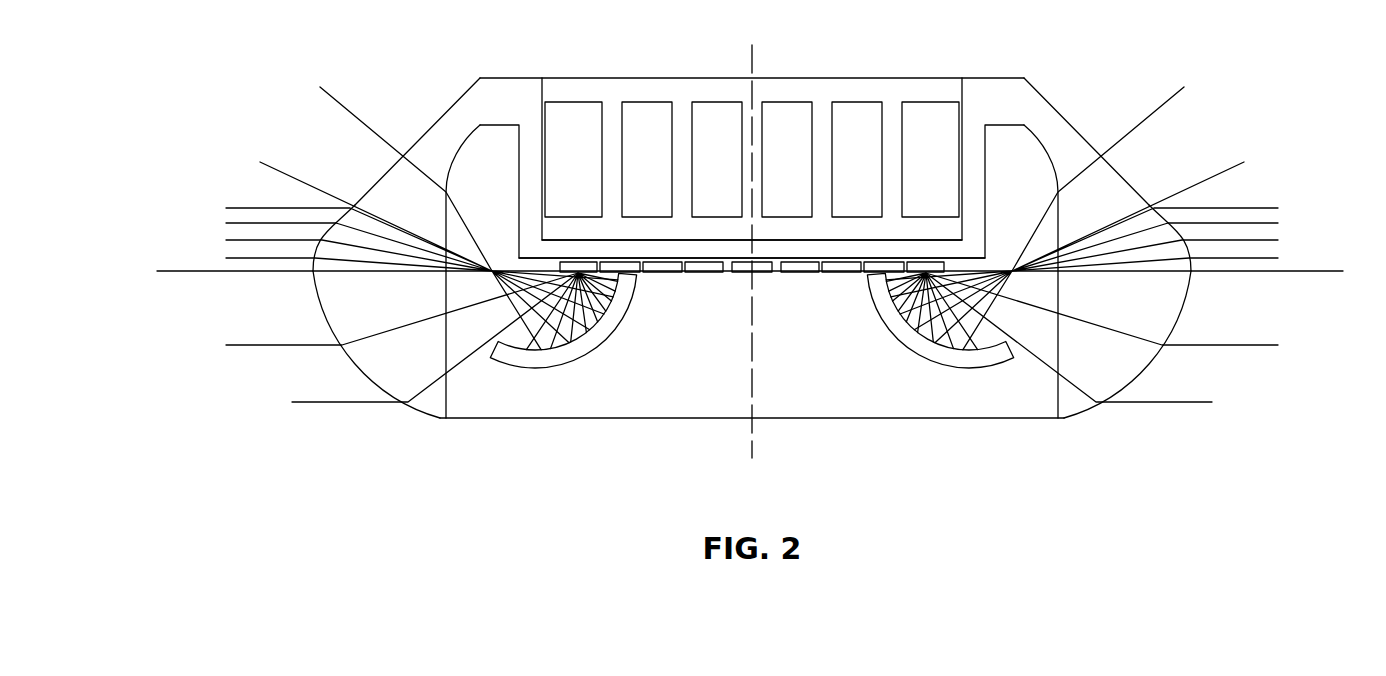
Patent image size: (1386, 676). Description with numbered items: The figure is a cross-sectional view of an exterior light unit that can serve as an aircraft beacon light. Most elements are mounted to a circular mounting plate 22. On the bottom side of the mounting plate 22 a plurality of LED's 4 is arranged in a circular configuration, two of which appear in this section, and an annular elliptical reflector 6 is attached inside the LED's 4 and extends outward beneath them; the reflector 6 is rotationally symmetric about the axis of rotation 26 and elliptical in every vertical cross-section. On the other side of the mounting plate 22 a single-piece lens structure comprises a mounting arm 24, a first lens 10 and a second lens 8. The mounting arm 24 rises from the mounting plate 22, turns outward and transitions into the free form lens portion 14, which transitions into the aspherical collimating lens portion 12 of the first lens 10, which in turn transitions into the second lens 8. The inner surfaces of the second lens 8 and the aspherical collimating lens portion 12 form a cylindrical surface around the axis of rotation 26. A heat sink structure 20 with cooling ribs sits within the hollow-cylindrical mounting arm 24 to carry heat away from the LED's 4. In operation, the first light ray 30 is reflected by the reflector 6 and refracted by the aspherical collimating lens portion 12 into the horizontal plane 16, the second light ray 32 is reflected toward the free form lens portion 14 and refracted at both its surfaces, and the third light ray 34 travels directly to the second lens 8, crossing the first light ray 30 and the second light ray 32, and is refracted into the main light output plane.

The LED 4 is at (622, 303).
The elliptical reflector 6 is at (533, 368).
The second lens 8 is at (311, 290).
The first lens 10 is at (309, 126).
The aspherical collimating lens portion 12 is at (333, 215).
The free form lens portion 14 is at (455, 110).
The horizontal plane 16 is at (186, 273).
The heat sink structure 20 is at (862, 78).
The mounting plate 22 is at (987, 250).
The mounting arm 24 is at (997, 78).
The axis of rotation 26 is at (753, 72).
The first light ray 30 is at (1277, 236).
The second light ray 32 is at (1167, 102).
The third light ray 34 is at (1045, 377).